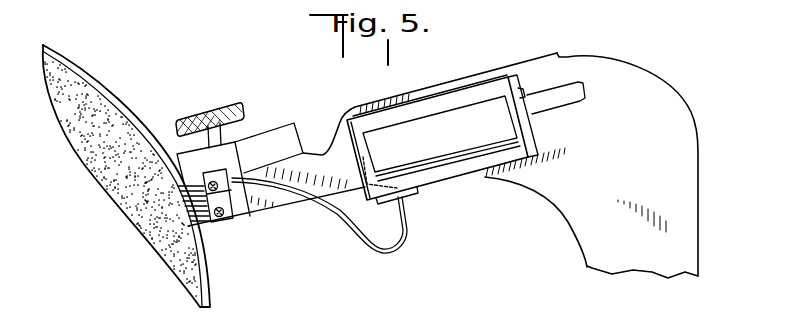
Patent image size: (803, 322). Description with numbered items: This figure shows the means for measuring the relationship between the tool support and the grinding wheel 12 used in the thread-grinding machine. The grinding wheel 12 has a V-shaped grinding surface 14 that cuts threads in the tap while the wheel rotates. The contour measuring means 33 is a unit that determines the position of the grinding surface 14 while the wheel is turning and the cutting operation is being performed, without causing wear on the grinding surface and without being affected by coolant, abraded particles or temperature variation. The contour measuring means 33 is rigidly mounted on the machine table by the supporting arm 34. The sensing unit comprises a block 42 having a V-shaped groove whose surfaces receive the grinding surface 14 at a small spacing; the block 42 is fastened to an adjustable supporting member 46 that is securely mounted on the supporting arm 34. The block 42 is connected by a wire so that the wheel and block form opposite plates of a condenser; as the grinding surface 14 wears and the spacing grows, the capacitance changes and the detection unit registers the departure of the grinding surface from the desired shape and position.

The grinding wheel 12 is at (113, 120).
The grinding surface 14 is at (207, 270).
The contour measuring means 33 is at (335, 115).
The supporting arm 34 is at (683, 115).
The block 42 is at (215, 223).
The adjustable supporting member 46 is at (232, 147).